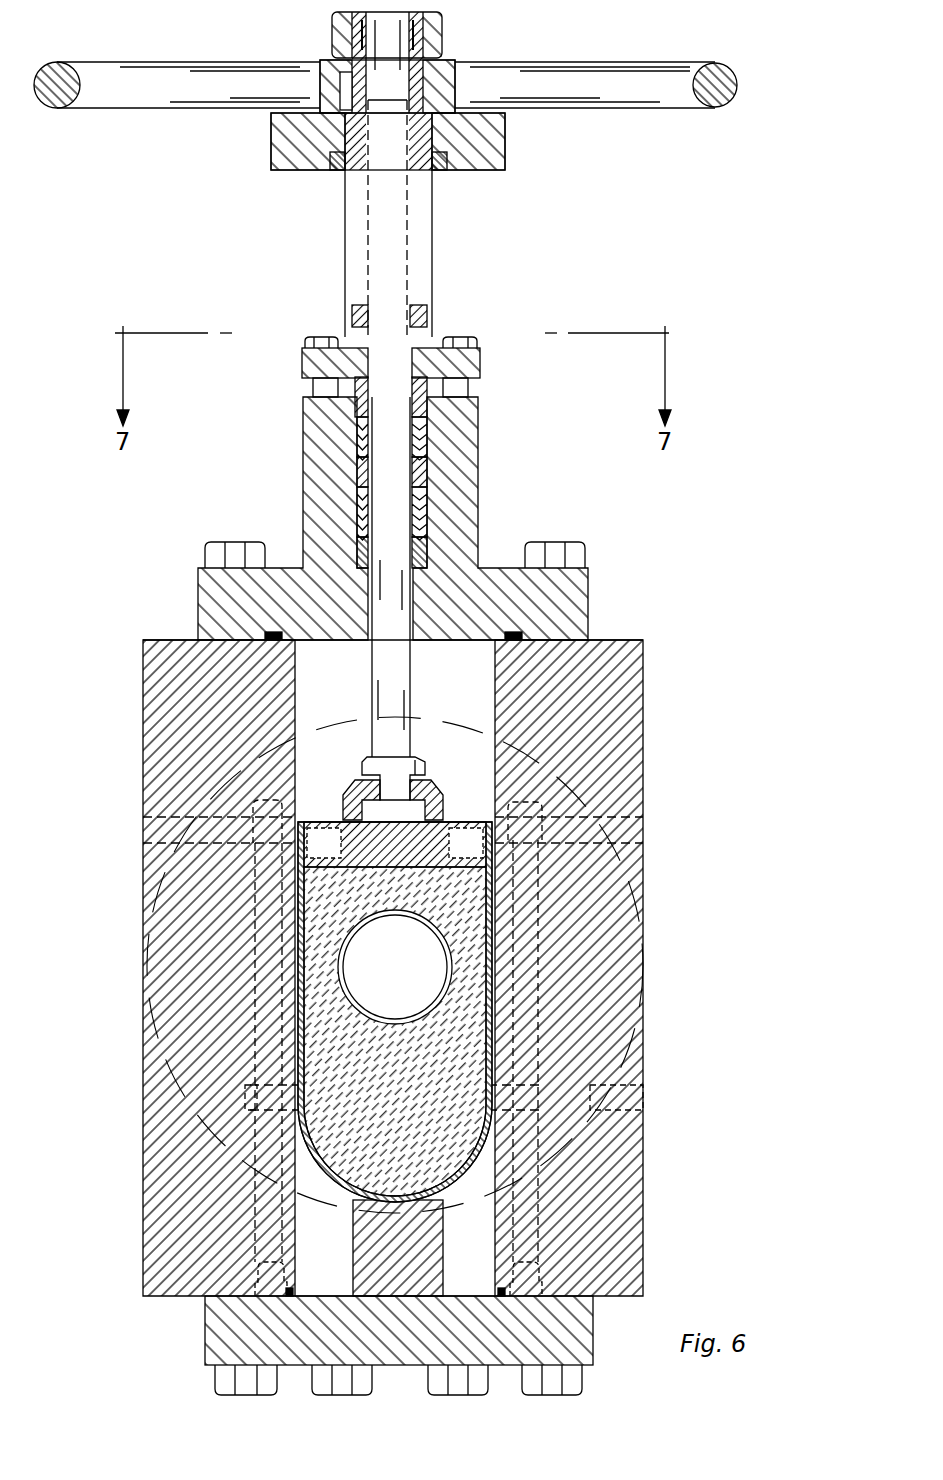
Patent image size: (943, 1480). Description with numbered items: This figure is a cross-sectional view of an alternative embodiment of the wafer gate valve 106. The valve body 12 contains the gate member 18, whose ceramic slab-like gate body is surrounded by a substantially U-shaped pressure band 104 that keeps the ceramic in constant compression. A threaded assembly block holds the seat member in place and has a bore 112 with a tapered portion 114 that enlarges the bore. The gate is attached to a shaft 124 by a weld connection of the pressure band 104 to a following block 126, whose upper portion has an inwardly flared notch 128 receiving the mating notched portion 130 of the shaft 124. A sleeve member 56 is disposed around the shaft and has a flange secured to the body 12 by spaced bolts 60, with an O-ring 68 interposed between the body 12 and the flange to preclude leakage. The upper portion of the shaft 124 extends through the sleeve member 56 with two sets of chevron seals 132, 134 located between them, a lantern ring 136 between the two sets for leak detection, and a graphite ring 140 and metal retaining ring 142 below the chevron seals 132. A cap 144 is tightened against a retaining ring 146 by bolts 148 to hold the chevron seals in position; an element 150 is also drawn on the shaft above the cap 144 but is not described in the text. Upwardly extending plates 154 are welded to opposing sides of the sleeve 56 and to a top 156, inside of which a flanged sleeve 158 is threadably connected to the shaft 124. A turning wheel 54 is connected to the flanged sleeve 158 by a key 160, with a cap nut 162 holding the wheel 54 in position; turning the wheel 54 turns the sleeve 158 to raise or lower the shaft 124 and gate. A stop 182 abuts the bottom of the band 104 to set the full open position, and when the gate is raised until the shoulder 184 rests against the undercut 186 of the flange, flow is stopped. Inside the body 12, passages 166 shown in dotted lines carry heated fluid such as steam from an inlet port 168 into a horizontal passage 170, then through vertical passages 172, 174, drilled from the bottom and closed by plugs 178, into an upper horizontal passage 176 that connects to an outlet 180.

The valve body 12 is at (584, 715).
The gate member 18 is at (414, 1155).
The turning wheel 54 is at (132, 101).
The sleeve member 56 is at (305, 533).
The bolts 60 is at (548, 544).
The O-ring 68 is at (278, 634).
The pressure band 104 is at (343, 1192).
The wafer gate valve 106 is at (208, 522).
The bore 112 is at (358, 928).
The tapered portion 114 is at (345, 968).
The shaft 124 is at (418, 746).
The following block 126 is at (418, 856).
The inwardly flared notch 128 is at (432, 806).
The notched portion 130 is at (385, 773).
The chevron seals 132 is at (368, 520).
The chevron seals 134 is at (368, 440).
The lantern ring 136 is at (368, 472).
The graphite ring 140 is at (368, 548).
The metal retaining ring 142 is at (420, 560).
The cap 144 is at (302, 363).
The retaining ring 146 is at (368, 402).
The bolts 148 is at (322, 337).
The stem sleeve collar 150 is at (427, 315).
The plates 154 is at (432, 250).
The top 156 is at (498, 142).
The flanged sleeve 158 is at (436, 170).
The key 160 is at (346, 71).
The cap nut 162 is at (438, 32).
The passages 166 is at (548, 803).
The inlet port 168 is at (643, 1095).
The horizontal passage 170 is at (560, 1085).
The vertical passage 172 is at (540, 1008).
The vertical passage 174 is at (255, 1008).
The upper horizontal passage 176 is at (222, 1052).
The plugs 178 is at (290, 1270).
The outlet 180 is at (150, 843).
The stop 182 is at (425, 1271).
The shoulder 184 is at (416, 764).
The undercut 186 is at (395, 686).